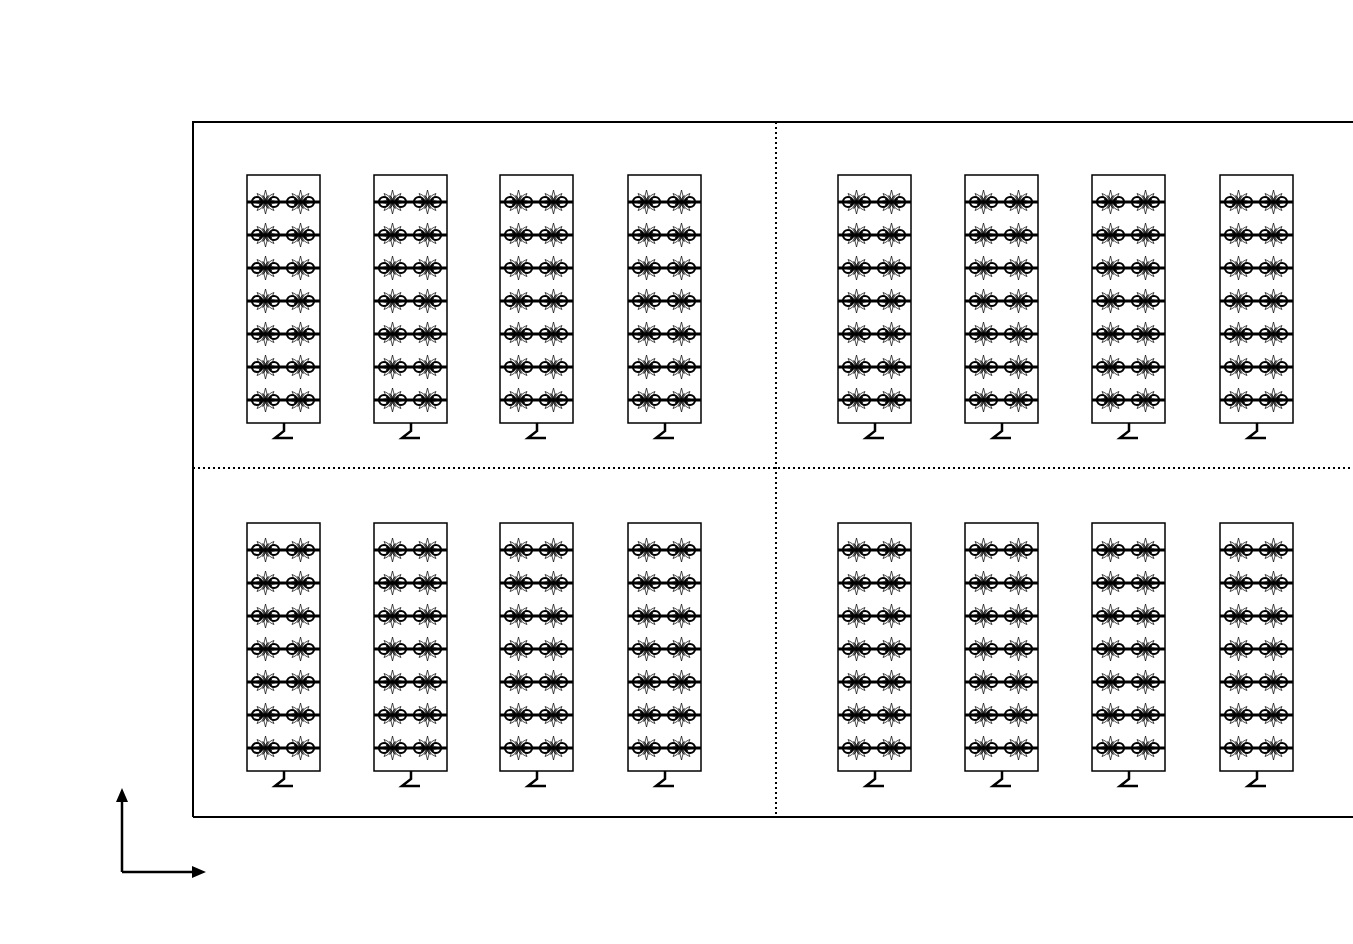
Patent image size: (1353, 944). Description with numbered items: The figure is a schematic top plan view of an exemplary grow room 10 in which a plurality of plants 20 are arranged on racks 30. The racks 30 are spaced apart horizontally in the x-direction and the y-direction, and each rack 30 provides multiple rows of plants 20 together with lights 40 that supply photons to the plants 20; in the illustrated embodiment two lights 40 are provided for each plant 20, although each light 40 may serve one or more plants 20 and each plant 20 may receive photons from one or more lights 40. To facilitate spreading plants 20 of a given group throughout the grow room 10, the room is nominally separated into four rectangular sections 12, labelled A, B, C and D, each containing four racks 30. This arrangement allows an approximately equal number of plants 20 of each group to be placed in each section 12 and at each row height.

The grow room 10 is at (177, 110).
The section 12 is at (582, 148).
The plant 20 is at (254, 209).
The rack 30 is at (232, 323).
The light 40 is at (309, 202).